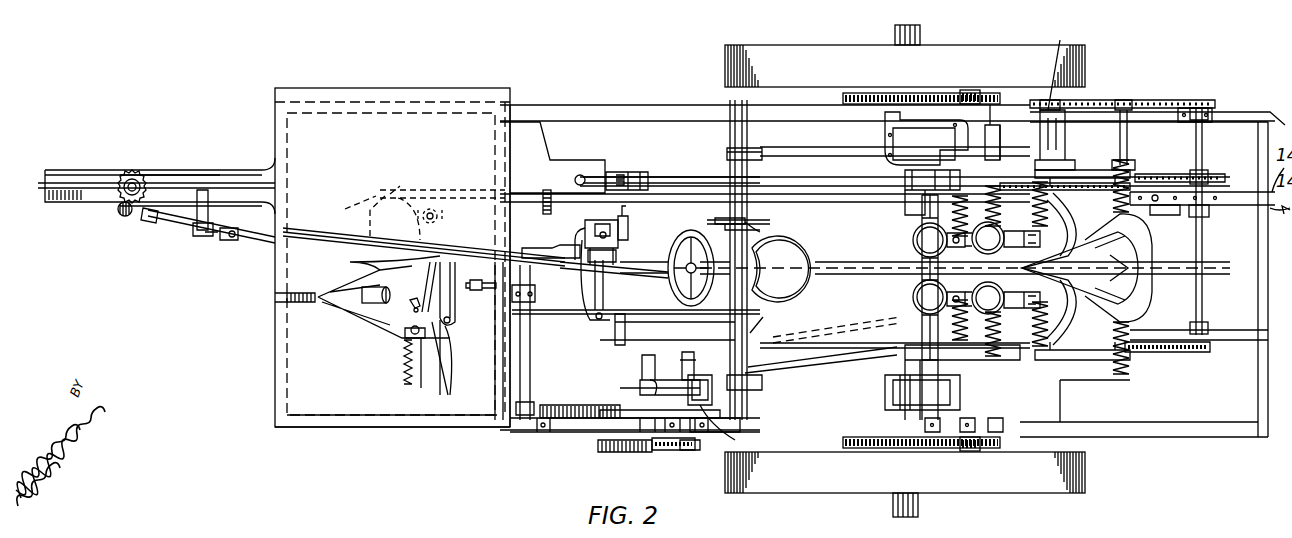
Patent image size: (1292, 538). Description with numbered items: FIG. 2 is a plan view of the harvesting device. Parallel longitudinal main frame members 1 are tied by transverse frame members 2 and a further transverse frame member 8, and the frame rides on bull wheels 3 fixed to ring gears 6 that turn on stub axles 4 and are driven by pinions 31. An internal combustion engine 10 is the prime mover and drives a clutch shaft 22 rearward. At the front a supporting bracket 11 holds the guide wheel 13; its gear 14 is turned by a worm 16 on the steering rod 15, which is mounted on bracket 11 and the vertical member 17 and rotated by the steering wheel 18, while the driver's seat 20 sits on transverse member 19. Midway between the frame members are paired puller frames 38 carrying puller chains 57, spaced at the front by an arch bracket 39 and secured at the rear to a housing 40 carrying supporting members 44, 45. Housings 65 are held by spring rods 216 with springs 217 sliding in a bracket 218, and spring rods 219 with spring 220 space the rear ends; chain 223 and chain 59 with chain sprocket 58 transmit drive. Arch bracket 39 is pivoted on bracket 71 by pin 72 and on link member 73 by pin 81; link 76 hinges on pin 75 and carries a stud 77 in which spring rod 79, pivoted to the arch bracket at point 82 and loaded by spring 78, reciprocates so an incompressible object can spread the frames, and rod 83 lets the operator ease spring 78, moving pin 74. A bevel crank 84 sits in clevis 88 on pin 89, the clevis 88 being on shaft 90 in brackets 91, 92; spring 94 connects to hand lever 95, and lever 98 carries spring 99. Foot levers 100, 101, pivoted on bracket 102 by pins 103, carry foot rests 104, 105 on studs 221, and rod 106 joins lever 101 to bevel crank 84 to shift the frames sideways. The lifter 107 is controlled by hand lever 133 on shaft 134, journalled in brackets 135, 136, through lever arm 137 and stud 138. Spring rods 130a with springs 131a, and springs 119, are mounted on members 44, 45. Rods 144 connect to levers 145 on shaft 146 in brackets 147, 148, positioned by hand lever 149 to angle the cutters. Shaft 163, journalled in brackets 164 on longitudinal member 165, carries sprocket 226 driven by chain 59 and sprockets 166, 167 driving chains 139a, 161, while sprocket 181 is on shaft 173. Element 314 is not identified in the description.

The longitudinal main frame member 1 is at (292, 426).
The transverse frame member 2 is at (275, 332).
The bull wheel 3 is at (750, 50).
The stub axle 4 is at (888, 122).
The ring gear 6 is at (843, 98).
The transverse frame member 8 is at (495, 402).
The internal combustion engine 10 is at (548, 146).
The supporting bracket 11 is at (244, 172).
The front or guide wheel 13 is at (72, 170).
The gear 14 is at (133, 160).
The steering rod 15 is at (172, 226).
The worm 16 is at (124, 216).
The vertical member 17 is at (560, 102).
The steering wheel 18 is at (680, 236).
The transverse member 19 is at (735, 104).
The driver's seat 20 is at (808, 258).
The clutch shaft 22 is at (840, 178).
The pinion 31 is at (968, 90).
The puller frame 38 is at (354, 331).
The arch bracket 39 is at (485, 295).
The housing 40 is at (918, 258).
The supporting member 44 is at (905, 355).
The supporting member 45 is at (906, 208).
The stalk puller chain 57 is at (358, 264).
The chain sprocket 58 is at (1062, 65).
The chain 59 is at (1140, 100).
The housing 65 is at (972, 262).
The bracket 71 is at (437, 207).
The pin 72 is at (442, 207).
The link member 73 is at (421, 373).
The pin 74 is at (456, 322).
The pin 75 is at (405, 310).
The link 76 is at (454, 344).
The stud 77 is at (408, 336).
The spring 78 is at (398, 384).
The spring rod 79 is at (428, 272).
The pin 81 is at (448, 340).
The pivot point 82 is at (440, 232).
The rod 83 is at (470, 345).
The bevel crank 84 is at (490, 288).
The clevis 88 is at (538, 293).
The pin 89 is at (410, 306).
The shaft 90 is at (555, 356).
The bracket 91 is at (565, 318).
The bracket 92 is at (540, 434).
The spring 94 is at (580, 434).
The hand lever 95 is at (594, 432).
The lever 98 is at (675, 452).
The spring 99 is at (652, 450).
The foot lever 100 is at (618, 252).
The foot lever 101 is at (573, 237).
The bracket 102 is at (612, 283).
The pin 103 is at (605, 325).
The foot rest 104 is at (627, 322).
The foot rest 105 is at (630, 222).
The rod 106 is at (558, 254).
The lifter 107 is at (828, 327).
The spring 119 is at (1128, 369).
The spring rod 130a is at (995, 125).
The spring 131a is at (968, 160).
The hand lever 133 is at (696, 448).
The short transverse shaft 134 is at (696, 372).
The bracket 135 is at (745, 430).
The bracket 136 is at (708, 394).
The lever arm 137 is at (641, 365).
The stud 138 is at (652, 390).
The chain 139a is at (1130, 168).
The rod 144 is at (808, 148).
The lever 145 is at (726, 156).
The transverse shaft 146 is at (755, 224).
The bracket 147 is at (720, 215).
The bracket 148 is at (748, 158).
The hand lever 149 is at (655, 207).
The chain 161 is at (1168, 174).
The shaft 163 is at (1204, 272).
The bracket 164 is at (1210, 210).
The longitudinal member 165 is at (1243, 112).
The chain sprocket 166 is at (1218, 182).
The chain sprocket 167 is at (1205, 172).
The shaft 173 is at (1128, 110).
The sprocket 181 is at (1120, 100).
The reciprocating spring rod 216 is at (328, 231).
The spring 217 is at (1040, 185).
The bracket 218 is at (1050, 180).
The reciprocating spring rod 219 is at (1005, 200).
The spring 220 is at (1000, 160).
The stud 221 is at (606, 222).
The chain 223 is at (952, 172).
The chain sprocket 226 is at (1218, 86).
The pin 314 is at (548, 191).